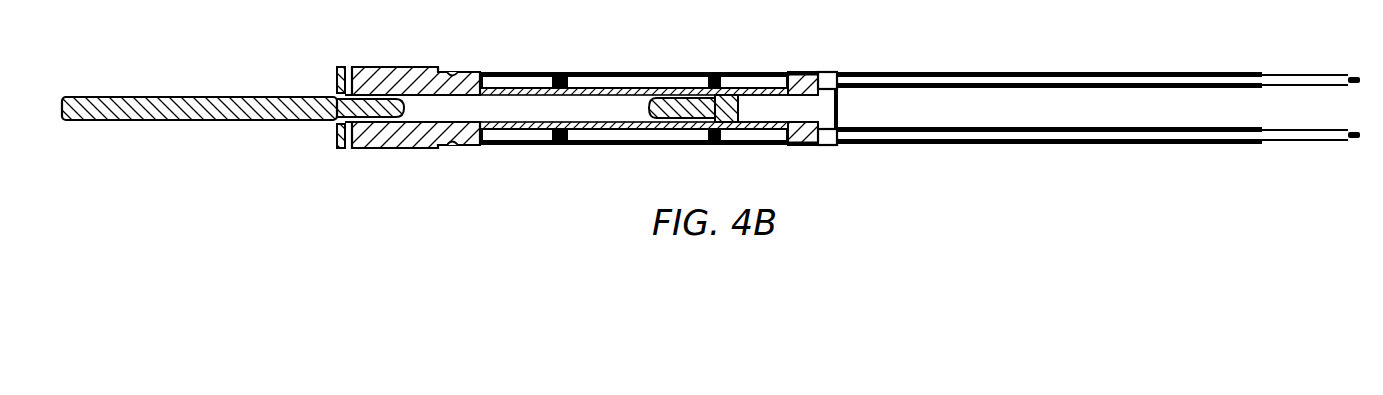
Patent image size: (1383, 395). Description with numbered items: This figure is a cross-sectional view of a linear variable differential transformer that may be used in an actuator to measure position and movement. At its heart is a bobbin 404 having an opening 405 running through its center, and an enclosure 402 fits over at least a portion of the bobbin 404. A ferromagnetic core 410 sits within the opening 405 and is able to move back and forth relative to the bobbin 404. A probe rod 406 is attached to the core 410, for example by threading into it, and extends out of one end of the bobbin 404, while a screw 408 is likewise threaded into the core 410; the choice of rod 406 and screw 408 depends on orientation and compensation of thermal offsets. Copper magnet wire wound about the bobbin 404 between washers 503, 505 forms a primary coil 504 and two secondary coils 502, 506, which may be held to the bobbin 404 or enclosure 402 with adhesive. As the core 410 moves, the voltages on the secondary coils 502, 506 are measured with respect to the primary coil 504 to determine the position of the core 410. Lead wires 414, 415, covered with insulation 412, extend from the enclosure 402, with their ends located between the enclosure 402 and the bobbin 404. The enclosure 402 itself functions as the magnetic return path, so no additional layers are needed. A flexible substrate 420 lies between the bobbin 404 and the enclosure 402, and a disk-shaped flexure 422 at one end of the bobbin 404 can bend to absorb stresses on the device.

The enclosure 402 is at (521, 147).
The bobbin 404 is at (390, 67).
The opening 405 is at (832, 107).
The probe rod 406 is at (222, 119).
The screw 408 is at (650, 106).
The ferromagnetic core 410 is at (430, 110).
The insulation 412 is at (995, 72).
The lead wire 414 is at (769, 145).
The lead wire 415 is at (764, 72).
The flexible substrate 420 is at (828, 72).
The flexure 422 is at (340, 67).
The secondary coil 502 is at (508, 82).
The washer 503 is at (558, 141).
The primary coil 504 is at (618, 82).
The washer 505 is at (713, 140).
The secondary coil 506 is at (762, 80).